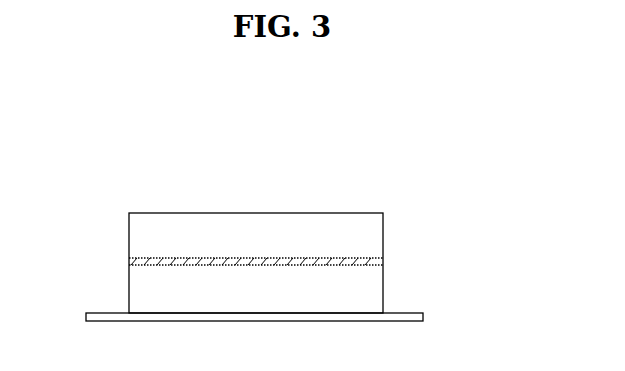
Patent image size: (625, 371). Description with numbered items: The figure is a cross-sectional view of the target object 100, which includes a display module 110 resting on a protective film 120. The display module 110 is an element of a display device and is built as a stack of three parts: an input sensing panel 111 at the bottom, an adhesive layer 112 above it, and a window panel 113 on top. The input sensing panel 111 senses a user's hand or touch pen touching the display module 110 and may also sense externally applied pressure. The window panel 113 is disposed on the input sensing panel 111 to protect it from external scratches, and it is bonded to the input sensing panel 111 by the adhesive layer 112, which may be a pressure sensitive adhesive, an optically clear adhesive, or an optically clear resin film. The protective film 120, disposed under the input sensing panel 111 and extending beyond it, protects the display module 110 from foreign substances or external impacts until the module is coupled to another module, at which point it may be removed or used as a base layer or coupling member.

The target object 100 is at (108, 158).
The display module 110 is at (463, 225).
The input sensing panel 111 is at (377, 294).
The adhesive layer 112 is at (377, 264).
The window panel 113 is at (377, 234).
The protective film 120 is at (423, 317).